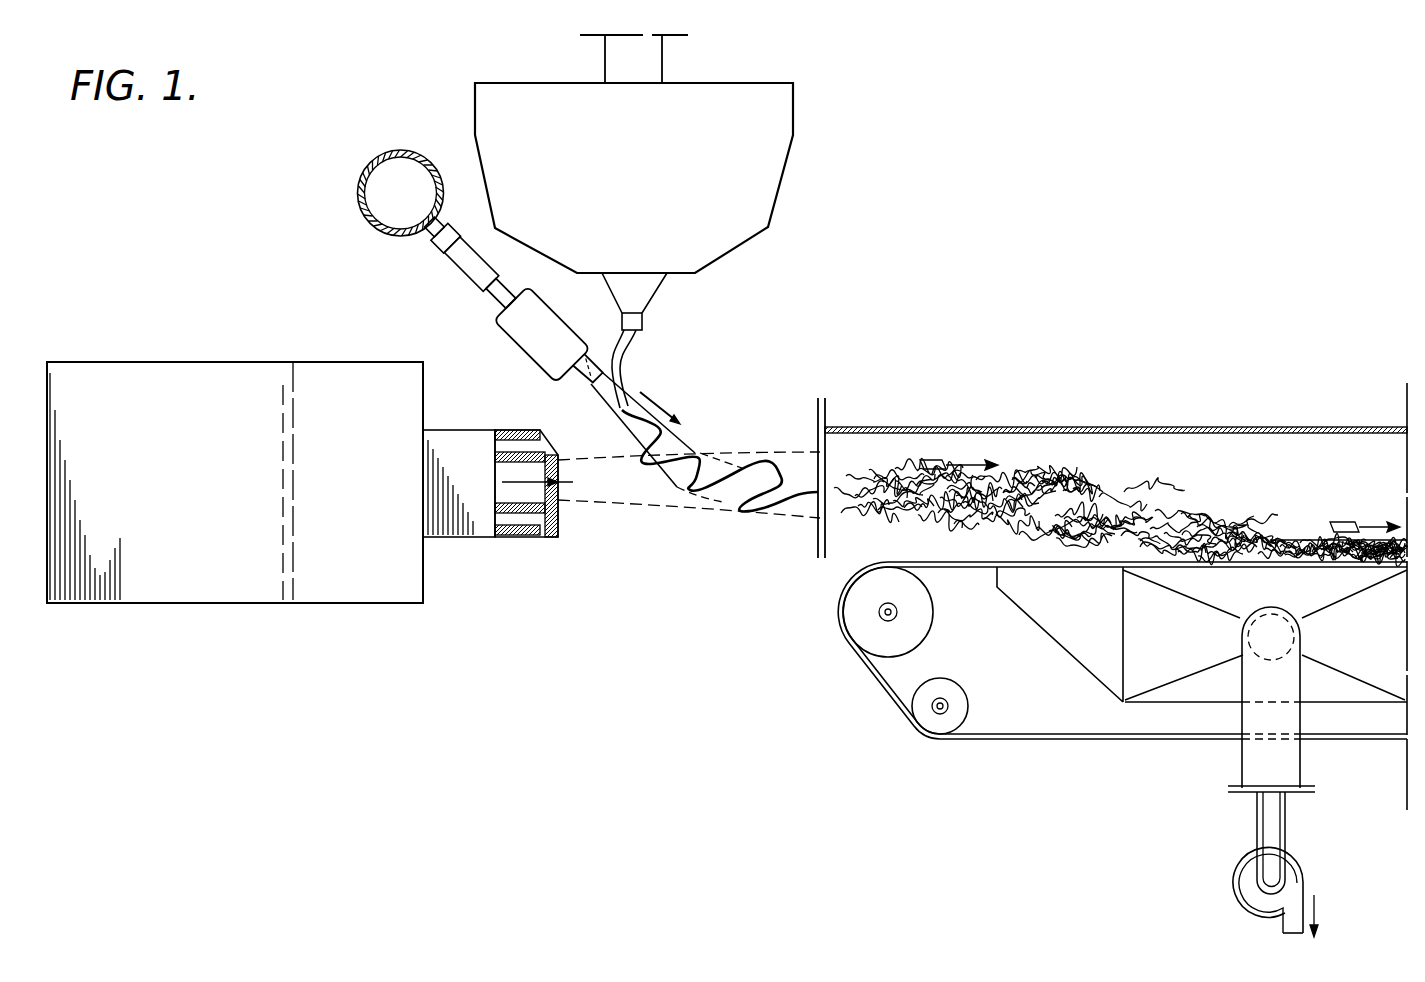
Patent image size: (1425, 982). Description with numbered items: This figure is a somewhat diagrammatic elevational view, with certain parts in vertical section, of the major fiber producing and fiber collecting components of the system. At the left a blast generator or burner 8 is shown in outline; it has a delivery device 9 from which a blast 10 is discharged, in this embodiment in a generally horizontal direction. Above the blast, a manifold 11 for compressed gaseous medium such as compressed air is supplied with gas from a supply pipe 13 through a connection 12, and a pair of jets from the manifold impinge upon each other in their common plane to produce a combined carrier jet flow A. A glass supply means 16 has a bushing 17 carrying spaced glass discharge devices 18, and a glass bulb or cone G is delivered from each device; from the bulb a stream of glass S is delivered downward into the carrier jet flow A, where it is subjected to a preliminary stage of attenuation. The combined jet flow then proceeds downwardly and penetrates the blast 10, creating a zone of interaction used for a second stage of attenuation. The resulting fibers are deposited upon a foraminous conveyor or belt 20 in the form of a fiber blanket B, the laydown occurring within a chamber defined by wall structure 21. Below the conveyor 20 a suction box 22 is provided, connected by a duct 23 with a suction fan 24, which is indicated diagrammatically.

The blast generator 8 is at (230, 604).
The delivery device 9 is at (524, 538).
The blast 10 is at (611, 505).
The manifold 11 is at (510, 335).
The connection 12 is at (447, 257).
The supply pipe 13 is at (370, 168).
The glass supply means 16 is at (765, 155).
The bushing 17 is at (646, 295).
The glass discharge device 18 is at (641, 322).
The foraminous conveyor 20 is at (970, 567).
The wall structure 21 is at (1127, 427).
The suction box 22 is at (1127, 684).
The duct 23 is at (1267, 800).
The suction fan 24 is at (1243, 888).
The glass bulb G is at (634, 342).
The stream of glass S is at (625, 388).
The combined carrier jet flow A is at (682, 435).
The fiber blanket B is at (1277, 540).